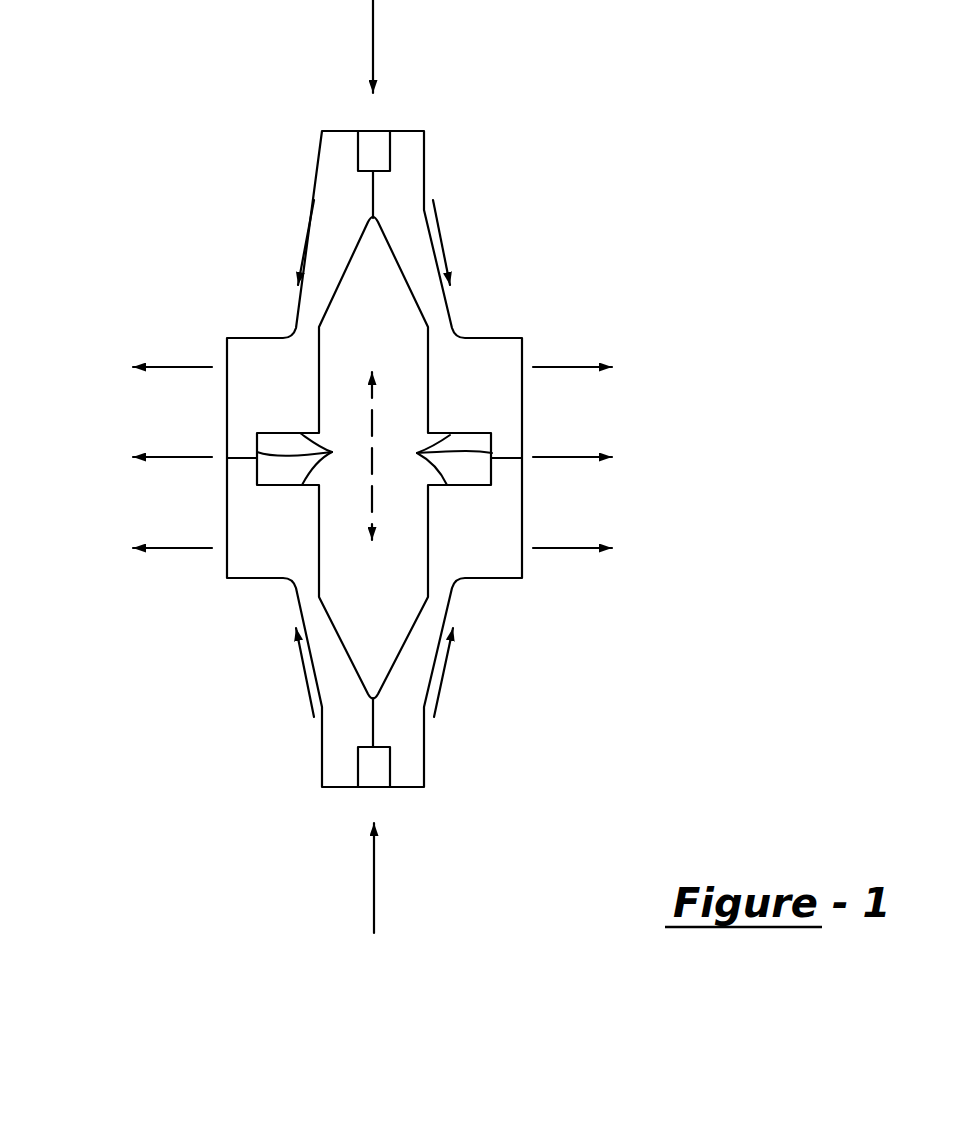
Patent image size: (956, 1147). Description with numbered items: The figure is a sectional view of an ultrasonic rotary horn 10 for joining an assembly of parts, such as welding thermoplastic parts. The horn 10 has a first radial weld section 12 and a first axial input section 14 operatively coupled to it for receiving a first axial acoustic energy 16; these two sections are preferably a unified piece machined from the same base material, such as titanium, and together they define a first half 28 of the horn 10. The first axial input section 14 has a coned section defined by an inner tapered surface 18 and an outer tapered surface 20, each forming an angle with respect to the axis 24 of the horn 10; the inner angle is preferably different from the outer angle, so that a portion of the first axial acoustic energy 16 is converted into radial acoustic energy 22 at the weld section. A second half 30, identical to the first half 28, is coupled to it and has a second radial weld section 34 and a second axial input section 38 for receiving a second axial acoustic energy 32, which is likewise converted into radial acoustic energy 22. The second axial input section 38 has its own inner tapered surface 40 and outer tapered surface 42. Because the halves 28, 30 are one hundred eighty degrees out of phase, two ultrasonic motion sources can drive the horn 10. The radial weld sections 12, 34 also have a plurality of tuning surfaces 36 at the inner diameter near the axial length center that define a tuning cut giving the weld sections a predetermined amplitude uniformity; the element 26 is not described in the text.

The ultrasonic rotary horn 10 is at (165, 85).
The first radial weld section 12 is at (525, 352).
The first axial input section 14 is at (425, 170).
The first axial acoustic energy 16 is at (373, 45).
The inner tapered surface 18 is at (410, 283).
The outer tapered surface 20 is at (302, 302).
The radial acoustic energy 22 is at (175, 548).
The axis 24 is at (372, 402).
The right inlet passage flow 26 is at (443, 243).
The first half 28 is at (605, 267).
The second half 30 is at (638, 610).
The second axial acoustic energy 32 is at (374, 857).
The second radial weld section 34 is at (227, 570).
The tuning surfaces 36 is at (374, 459).
The second axial input section 38 is at (427, 752).
The inner tapered surface 40 is at (403, 637).
The outer tapered surface 42 is at (450, 607).